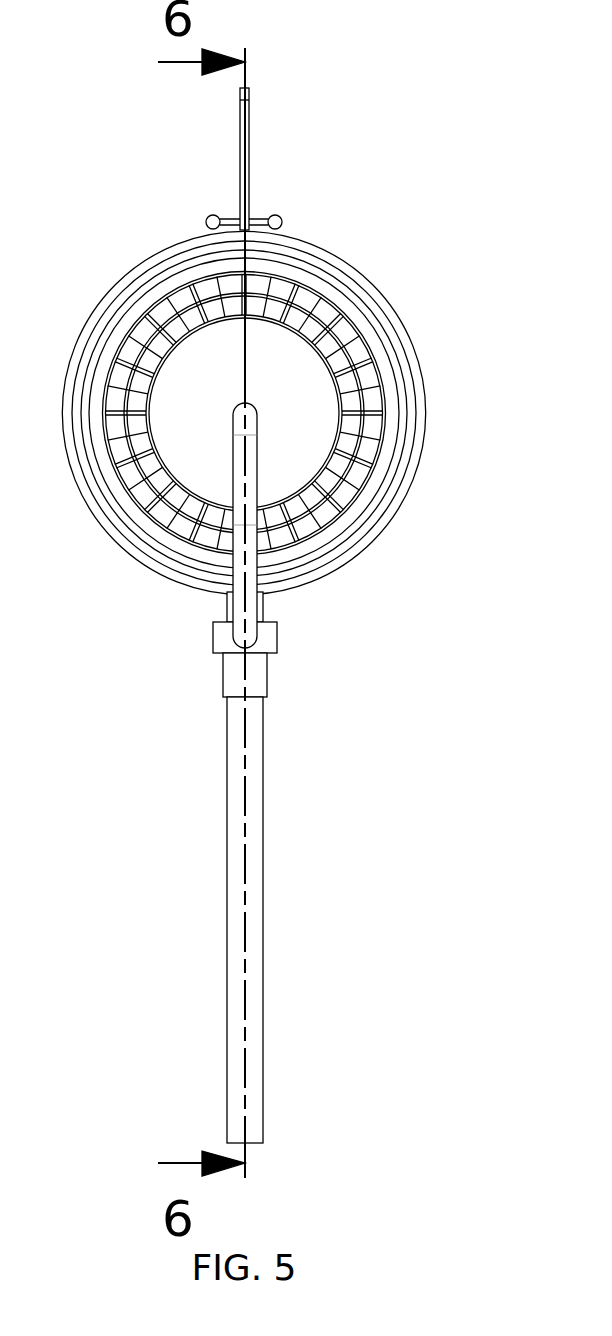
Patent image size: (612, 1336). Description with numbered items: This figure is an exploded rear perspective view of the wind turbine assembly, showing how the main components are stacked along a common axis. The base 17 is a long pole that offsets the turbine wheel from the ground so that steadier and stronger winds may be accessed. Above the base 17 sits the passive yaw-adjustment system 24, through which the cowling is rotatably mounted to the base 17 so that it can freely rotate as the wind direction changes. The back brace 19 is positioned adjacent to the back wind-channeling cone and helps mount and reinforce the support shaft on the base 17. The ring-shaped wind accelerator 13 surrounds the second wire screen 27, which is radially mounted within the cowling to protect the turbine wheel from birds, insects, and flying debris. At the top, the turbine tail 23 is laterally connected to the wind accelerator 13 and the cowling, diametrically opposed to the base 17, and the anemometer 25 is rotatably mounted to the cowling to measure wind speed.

The wind accelerator 13 is at (327, 253).
The base 17 is at (263, 923).
The back brace 19 is at (253, 473).
The turbine tail 23 is at (250, 122).
The passive yaw-adjustment system 24 is at (227, 667).
The anemometer 25 is at (212, 217).
The second wire screen 27 is at (176, 344).